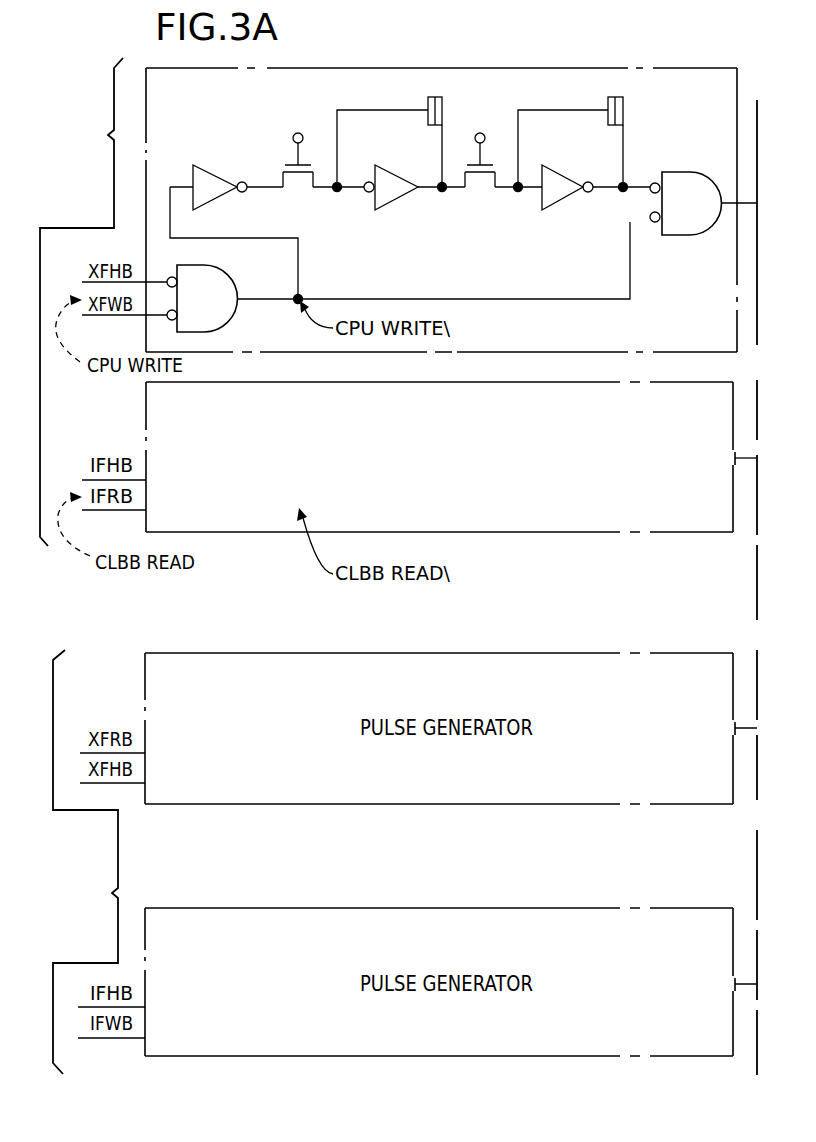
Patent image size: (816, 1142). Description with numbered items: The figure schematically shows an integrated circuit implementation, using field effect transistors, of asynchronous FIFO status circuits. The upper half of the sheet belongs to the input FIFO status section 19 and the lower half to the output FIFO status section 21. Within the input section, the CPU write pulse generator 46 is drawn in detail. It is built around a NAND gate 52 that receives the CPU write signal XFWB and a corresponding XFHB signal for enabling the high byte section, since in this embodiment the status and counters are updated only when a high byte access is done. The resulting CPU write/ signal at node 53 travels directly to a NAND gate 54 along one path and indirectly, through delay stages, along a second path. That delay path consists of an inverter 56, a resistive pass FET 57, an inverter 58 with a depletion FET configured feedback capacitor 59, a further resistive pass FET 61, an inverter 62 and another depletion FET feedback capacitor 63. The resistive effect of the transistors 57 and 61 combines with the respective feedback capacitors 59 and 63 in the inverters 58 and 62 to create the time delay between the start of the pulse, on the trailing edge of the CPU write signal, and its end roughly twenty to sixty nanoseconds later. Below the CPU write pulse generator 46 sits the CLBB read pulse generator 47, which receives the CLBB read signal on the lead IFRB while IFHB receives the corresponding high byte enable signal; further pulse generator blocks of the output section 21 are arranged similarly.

The input FIFO status section 19 is at (78, 178).
The output FIFO status section 21 is at (70, 858).
The CPU write pulse generator 46 is at (612, 66).
The CLBB read pulse generator 47 is at (535, 533).
The NAND gate 52 is at (222, 287).
The node 53 is at (302, 295).
The NAND gate 54 is at (693, 182).
The inverter 56 is at (219, 172).
The resistive pass FET 57 is at (303, 185).
The inverter 58 is at (392, 196).
The depletion FET configured feedback capacitor 59 is at (428, 100).
The resistive pass FET 61 is at (481, 185).
The inverter 62 is at (560, 194).
The depletion FET feedback capacitor 63 is at (608, 100).